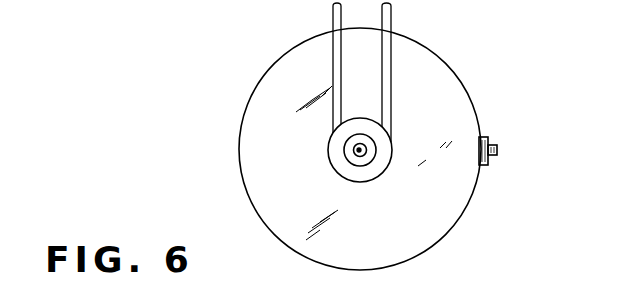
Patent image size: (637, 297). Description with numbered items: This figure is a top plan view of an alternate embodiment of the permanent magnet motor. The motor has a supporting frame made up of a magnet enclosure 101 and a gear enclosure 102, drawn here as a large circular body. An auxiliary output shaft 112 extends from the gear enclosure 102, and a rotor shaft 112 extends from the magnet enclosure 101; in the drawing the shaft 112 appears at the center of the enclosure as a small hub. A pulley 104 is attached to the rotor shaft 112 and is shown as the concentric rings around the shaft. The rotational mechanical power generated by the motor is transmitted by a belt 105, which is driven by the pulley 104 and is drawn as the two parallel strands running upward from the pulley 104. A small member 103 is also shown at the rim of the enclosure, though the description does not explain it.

The magnet enclosure 101 is at (262, 112).
The gear enclosure 102 is at (236, 172).
The stop member 103 is at (490, 145).
The pulley 104 is at (377, 163).
The belt 105 is at (390, 18).
The rotor shaft 112 is at (359, 151).